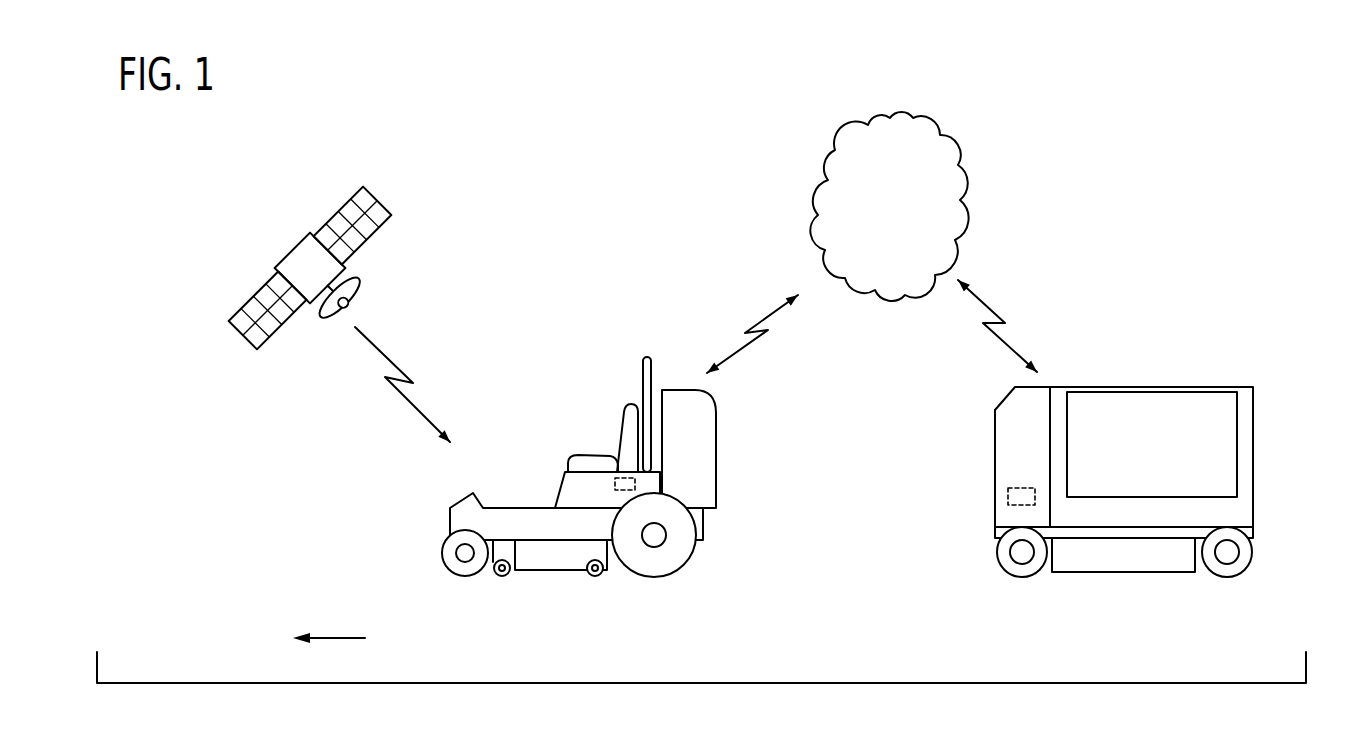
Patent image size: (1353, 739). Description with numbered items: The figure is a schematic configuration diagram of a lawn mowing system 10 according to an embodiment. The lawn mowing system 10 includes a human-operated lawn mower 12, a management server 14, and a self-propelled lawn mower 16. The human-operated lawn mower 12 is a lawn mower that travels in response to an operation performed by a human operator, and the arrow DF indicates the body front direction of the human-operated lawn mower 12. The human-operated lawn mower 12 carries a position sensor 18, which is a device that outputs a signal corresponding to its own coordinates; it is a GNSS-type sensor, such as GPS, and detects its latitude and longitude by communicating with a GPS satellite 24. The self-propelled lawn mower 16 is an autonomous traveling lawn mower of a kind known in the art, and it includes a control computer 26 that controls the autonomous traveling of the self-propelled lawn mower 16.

The lawn mowing system 10 is at (202, 183).
The human-operated lawn mower 12 is at (717, 435).
The management server 14 is at (830, 152).
The self-propelled lawn mower 16 is at (1193, 387).
The position sensor 18 is at (636, 486).
The GPS satellite 24 is at (288, 250).
The control computer 26 is at (1008, 494).